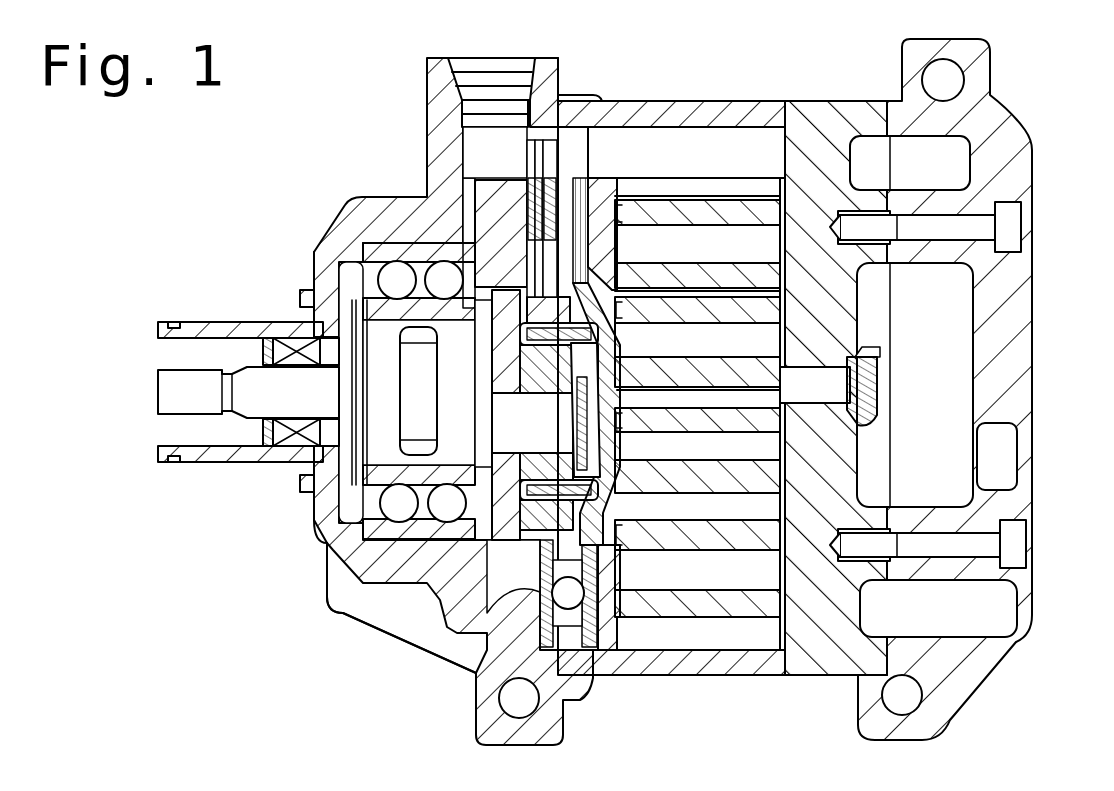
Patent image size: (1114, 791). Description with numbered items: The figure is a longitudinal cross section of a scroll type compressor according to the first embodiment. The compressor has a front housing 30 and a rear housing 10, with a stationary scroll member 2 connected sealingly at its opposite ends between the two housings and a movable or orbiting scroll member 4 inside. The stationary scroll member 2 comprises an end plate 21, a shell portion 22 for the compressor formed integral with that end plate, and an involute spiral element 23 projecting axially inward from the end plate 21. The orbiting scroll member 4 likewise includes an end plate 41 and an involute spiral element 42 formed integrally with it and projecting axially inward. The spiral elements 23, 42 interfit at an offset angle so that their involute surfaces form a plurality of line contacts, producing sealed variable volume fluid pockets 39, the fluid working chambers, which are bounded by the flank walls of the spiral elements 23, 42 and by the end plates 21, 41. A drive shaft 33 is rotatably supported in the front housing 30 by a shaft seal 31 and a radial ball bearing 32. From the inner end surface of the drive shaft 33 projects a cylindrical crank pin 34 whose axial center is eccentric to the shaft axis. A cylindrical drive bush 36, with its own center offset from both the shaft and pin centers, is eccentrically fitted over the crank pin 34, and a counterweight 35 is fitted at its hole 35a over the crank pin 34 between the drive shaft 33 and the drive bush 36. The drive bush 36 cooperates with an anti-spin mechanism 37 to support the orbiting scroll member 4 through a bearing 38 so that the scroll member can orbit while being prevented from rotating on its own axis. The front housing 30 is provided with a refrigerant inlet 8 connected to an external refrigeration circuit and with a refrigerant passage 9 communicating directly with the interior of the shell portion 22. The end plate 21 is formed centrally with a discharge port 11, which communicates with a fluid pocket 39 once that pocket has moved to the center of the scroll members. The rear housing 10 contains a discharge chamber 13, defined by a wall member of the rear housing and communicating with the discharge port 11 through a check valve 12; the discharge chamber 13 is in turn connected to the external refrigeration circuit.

The stationary scroll member 2 is at (848, 720).
The orbiting scroll member 4 is at (742, 56).
The refrigerant inlet 8 is at (445, 80).
The refrigerant passage 9 is at (553, 130).
The rear housing 10 is at (1020, 390).
The discharge port 11 is at (867, 360).
The check valve 12 is at (877, 387).
The discharge chamber 13 is at (948, 472).
The end plate 21 is at (828, 637).
The shell portion 22 is at (763, 117).
The involute spiral element 23 is at (720, 672).
The front housing 30 is at (420, 577).
The shaft seal 31 is at (277, 447).
The radial ball bearing 32 is at (350, 563).
The drive shaft 33 is at (193, 385).
The crank pin 34 is at (512, 443).
The counterweight 35 is at (492, 212).
The hole 35a is at (482, 467).
The drive bush 36 is at (600, 370).
The anti-spin mechanism 37 is at (545, 602).
The bearing 38 is at (600, 465).
The fluid pockets 39 is at (747, 257).
The end plate 41 is at (600, 220).
The involute spiral element 42 is at (730, 187).